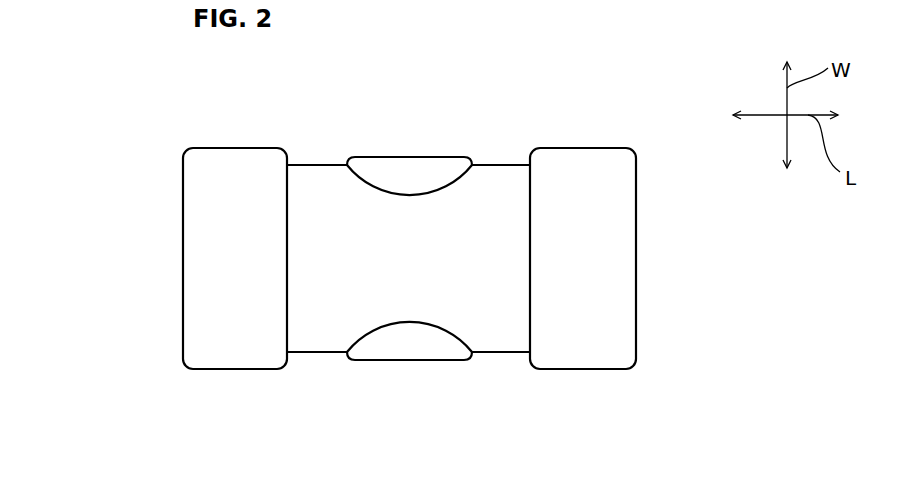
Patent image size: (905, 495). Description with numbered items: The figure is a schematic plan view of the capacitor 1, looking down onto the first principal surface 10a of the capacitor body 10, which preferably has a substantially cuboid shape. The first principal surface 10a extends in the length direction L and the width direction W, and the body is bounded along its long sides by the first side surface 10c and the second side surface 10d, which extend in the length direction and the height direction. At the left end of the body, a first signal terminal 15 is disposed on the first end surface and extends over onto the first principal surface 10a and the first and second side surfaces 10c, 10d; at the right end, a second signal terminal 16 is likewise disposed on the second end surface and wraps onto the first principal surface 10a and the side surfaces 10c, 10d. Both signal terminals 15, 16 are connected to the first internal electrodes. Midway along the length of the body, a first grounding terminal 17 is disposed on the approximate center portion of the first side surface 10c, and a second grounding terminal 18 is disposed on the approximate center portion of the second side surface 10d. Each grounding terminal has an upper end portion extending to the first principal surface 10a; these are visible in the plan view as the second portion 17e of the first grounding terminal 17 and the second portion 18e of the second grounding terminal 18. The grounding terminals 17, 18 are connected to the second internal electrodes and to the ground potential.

The capacitor 1 is at (643, 121).
The capacitor body 10 is at (501, 361).
The first principal surface 10a is at (505, 192).
The first side surface 10c is at (320, 160).
The second side surface 10d is at (312, 354).
The first signal terminal 15 is at (175, 307).
The second signal terminal 16 is at (646, 319).
The first grounding terminal 17 is at (420, 145).
The second portion 17e is at (380, 163).
The second grounding terminal 18 is at (443, 370).
The second portion 18e is at (386, 352).